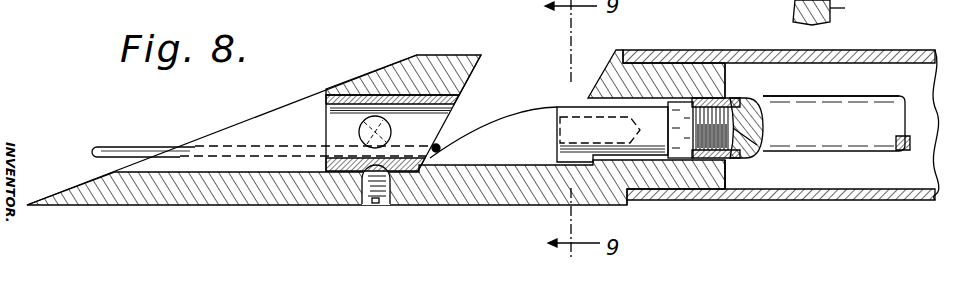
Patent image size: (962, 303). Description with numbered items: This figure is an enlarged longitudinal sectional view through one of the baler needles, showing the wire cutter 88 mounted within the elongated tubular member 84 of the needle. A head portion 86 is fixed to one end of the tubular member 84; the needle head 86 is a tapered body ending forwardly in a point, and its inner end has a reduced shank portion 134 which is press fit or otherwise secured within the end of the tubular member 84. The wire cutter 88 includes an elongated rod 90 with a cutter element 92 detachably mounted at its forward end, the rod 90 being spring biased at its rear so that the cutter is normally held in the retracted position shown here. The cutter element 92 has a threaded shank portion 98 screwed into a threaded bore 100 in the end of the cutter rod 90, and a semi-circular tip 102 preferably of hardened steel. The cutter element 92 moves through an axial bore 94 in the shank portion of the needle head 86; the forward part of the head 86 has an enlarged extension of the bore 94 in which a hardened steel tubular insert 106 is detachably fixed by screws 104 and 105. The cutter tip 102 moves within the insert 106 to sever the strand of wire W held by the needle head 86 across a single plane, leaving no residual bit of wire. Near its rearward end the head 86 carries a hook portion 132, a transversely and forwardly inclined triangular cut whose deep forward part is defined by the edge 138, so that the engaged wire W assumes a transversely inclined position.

The elongated tubular member 84 is at (678, 51).
The head portion 86 is at (449, 51).
The wire cutter 88 is at (836, 123).
The elongated rod 90 is at (878, 86).
The cutter element 92 is at (607, 122).
The axial bore 94 is at (632, 158).
The threaded shank portion 98 is at (738, 98).
The threaded bore 100 is at (757, 145).
The semi-circular tip 102 is at (557, 133).
The screw 104 is at (326, 127).
The screw 105 is at (366, 203).
The tubular insert 106 is at (326, 108).
The hook portion 132 is at (484, 78).
The reduced shank portion 134 is at (730, 180).
The edge 138 is at (508, 118).
The strand of wire W is at (440, 140).